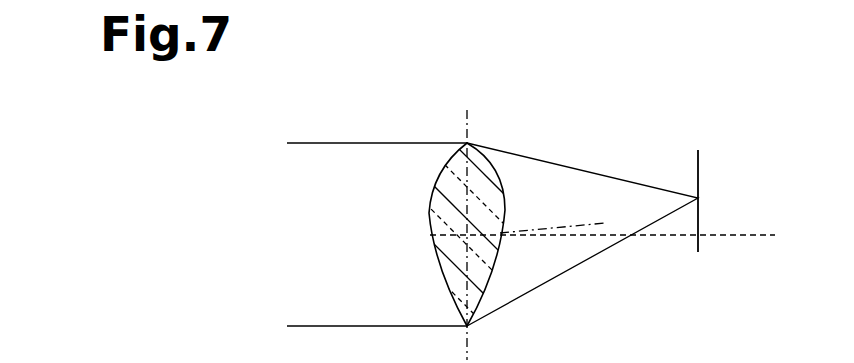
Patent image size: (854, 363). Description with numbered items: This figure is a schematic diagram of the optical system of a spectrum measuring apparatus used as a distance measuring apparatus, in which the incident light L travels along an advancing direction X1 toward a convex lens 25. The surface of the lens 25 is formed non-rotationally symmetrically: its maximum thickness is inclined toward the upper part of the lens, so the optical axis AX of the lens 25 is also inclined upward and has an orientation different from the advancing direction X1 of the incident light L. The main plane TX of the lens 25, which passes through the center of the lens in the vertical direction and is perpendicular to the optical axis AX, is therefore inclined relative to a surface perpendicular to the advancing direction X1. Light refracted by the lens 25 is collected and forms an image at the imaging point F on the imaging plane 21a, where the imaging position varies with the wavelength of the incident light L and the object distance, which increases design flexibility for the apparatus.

The lens 25 is at (486, 167).
The imaging plane 21a is at (695, 158).
The imaging point F is at (697, 199).
The optical axis AX is at (559, 226).
The main plane TX is at (467, 220).
The incident light L is at (372, 143).
The advancing direction X1 is at (202, 88).